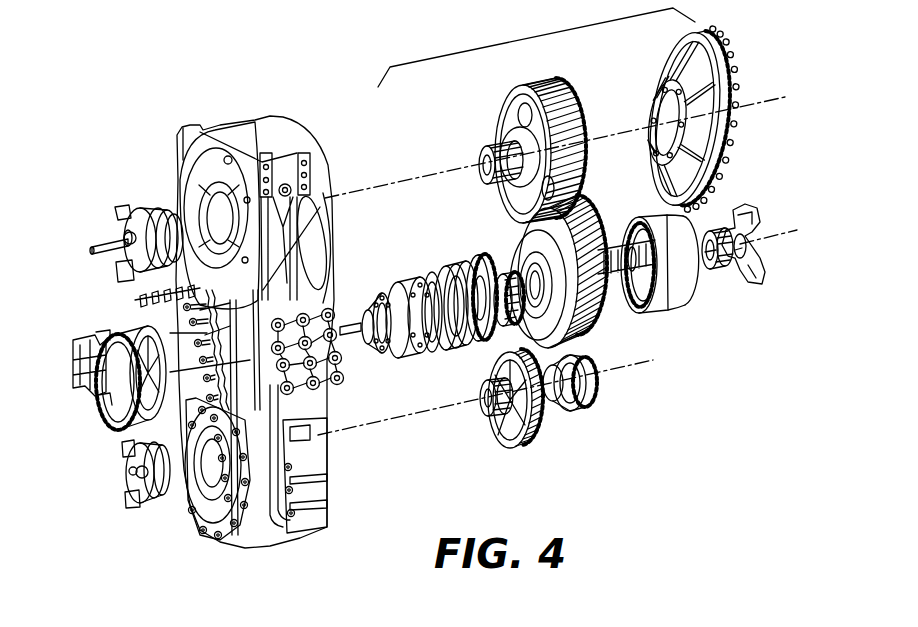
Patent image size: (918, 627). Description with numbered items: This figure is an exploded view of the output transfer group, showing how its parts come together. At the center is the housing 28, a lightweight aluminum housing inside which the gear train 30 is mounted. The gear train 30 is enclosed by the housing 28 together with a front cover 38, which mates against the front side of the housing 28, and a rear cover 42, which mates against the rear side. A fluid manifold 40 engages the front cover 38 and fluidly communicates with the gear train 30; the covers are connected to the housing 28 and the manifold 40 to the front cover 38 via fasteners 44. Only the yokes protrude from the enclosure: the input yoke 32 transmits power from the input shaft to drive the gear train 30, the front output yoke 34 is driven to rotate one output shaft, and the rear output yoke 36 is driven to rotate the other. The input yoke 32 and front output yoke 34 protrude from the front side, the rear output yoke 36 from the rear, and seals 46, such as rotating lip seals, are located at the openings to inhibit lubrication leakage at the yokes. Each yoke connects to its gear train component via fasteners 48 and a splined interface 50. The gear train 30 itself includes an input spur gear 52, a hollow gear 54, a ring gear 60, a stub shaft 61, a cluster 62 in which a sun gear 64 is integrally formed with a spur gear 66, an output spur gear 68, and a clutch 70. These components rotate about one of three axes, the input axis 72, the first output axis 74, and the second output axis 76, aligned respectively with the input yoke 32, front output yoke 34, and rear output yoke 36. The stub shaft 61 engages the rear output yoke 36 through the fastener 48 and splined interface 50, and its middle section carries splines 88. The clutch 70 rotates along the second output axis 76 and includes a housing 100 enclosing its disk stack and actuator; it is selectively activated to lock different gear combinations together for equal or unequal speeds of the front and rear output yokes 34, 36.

The housing 28 is at (250, 118).
The gear train 30 is at (522, 38).
The input yoke 32 is at (120, 207).
The front output yoke 34 is at (125, 496).
The rear output yoke 36 is at (756, 216).
The front cover 38 is at (193, 532).
The fluid manifold 40 is at (97, 405).
The rear cover 42 is at (712, 63).
The fasteners 44 is at (107, 424).
The seals 46 is at (200, 212).
The fasteners 48 is at (92, 251).
The splined interface 50 is at (495, 140).
The input spur gear 52 is at (555, 92).
The hollow gear 54 is at (574, 233).
The ring gear 60 is at (650, 310).
The stub shaft 61 is at (648, 292).
The cluster 62 is at (471, 243).
The sun gear 64 is at (519, 331).
The spur gear 66 is at (492, 245).
The output spur gear 68 is at (532, 440).
The clutch 70 is at (421, 363).
The input axis 72 is at (769, 97).
The first output axis 74 is at (640, 370).
The second output axis 76 is at (786, 234).
The splines 88 is at (617, 262).
The housing 100 is at (377, 292).